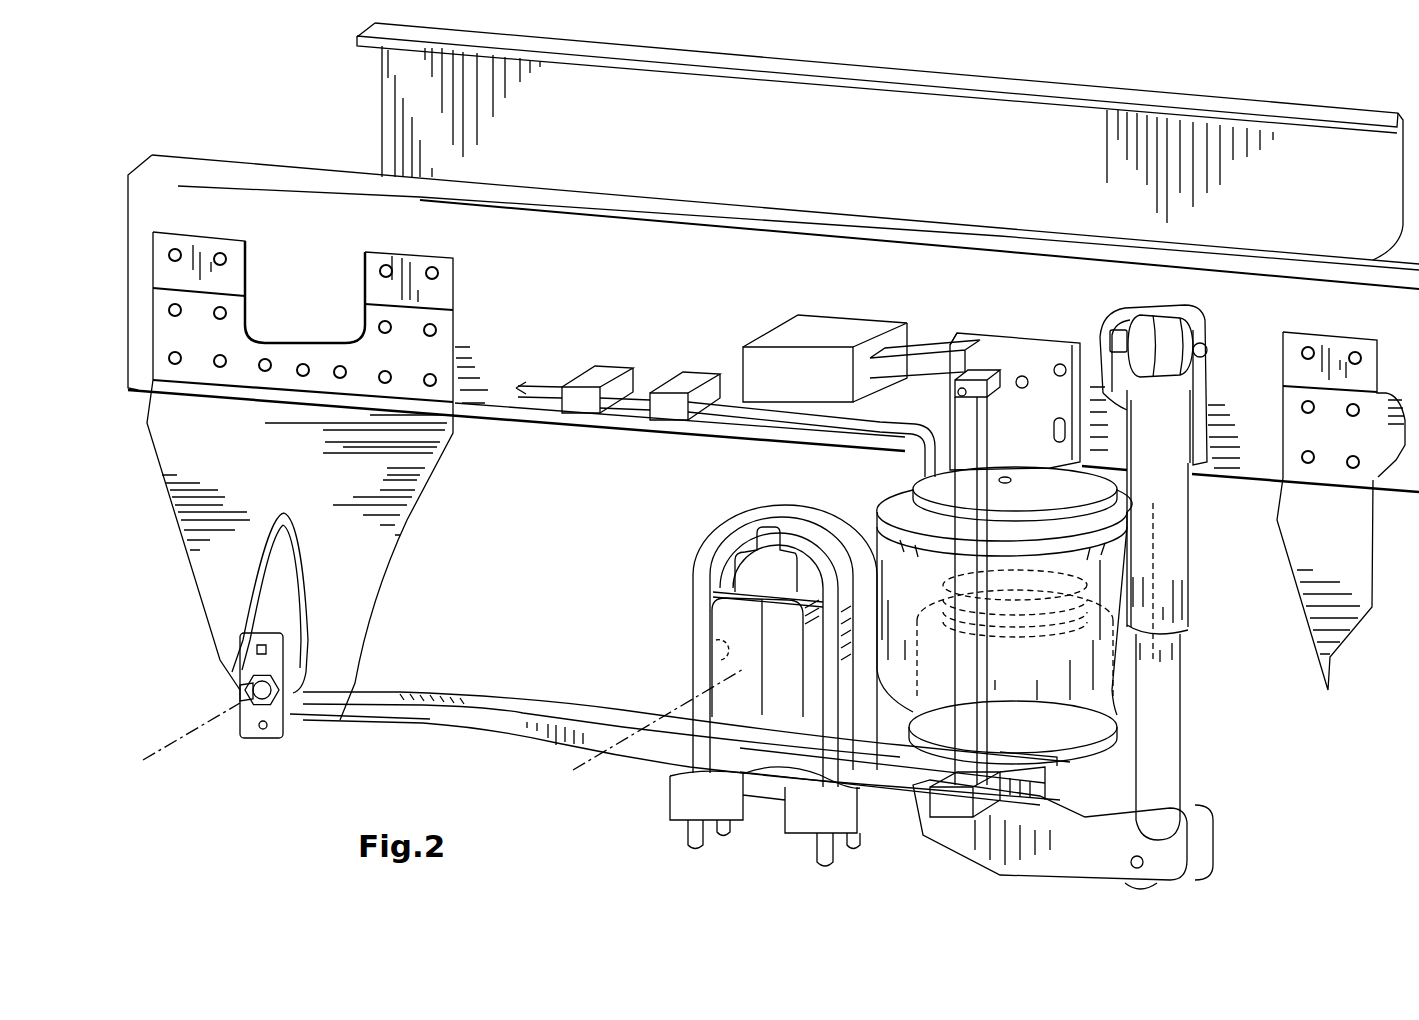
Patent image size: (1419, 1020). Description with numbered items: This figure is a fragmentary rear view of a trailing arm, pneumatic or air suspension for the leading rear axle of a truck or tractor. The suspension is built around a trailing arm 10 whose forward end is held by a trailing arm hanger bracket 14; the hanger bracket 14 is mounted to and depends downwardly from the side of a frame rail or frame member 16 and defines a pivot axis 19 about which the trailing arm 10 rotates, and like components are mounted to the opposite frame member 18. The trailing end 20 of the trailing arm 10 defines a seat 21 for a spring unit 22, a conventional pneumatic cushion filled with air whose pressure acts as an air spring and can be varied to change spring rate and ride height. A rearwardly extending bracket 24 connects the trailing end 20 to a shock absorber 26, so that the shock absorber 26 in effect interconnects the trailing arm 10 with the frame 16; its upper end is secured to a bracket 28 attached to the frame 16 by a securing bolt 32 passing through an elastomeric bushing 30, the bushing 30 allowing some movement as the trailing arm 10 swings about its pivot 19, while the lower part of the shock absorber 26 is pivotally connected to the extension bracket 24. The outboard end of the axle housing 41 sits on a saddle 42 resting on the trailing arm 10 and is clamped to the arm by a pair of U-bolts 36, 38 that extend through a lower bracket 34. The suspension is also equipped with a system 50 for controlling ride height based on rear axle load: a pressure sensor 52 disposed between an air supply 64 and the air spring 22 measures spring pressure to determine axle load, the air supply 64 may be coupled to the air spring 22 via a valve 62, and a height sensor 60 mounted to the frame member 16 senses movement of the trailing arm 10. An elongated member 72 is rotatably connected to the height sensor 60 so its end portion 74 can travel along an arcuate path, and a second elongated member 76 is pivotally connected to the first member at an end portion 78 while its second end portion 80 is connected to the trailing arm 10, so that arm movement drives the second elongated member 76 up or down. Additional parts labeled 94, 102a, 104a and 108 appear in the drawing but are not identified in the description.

The trailing arm 10 is at (551, 705).
The trailing arm hanger bracket 14 is at (167, 528).
The frame rail 16 is at (718, 282).
The opposite frame member 18 is at (770, 169).
The pivot axis 19 is at (143, 760).
The trailing end 20 is at (913, 790).
The seat 21 is at (1040, 752).
The spring unit 22 is at (930, 594).
The rearwardly extending bracket 24 is at (1027, 878).
The shock absorber 26 is at (1200, 657).
The bracket 28 is at (1210, 372).
The elastomeric bushing 30 is at (1200, 353).
The securing bolt 32 is at (1208, 353).
The lower bracket 34 is at (695, 800).
The U-bolt 36 is at (717, 542).
The U-bolt 38 is at (818, 510).
The axle housing 41 is at (713, 656).
The saddle 42 is at (723, 727).
The ride height control system 50 is at (813, 283).
The pressure sensor 52 is at (683, 373).
The height sensor 60 is at (843, 340).
The valve 62 is at (601, 373).
The air supply 64 is at (522, 380).
The elongated member 72 is at (917, 372).
The end portion 74 is at (1003, 337).
The second elongated member 76 is at (967, 643).
The end portion 78 is at (967, 425).
The second end portion 80 is at (967, 760).
The pivot bolt 94 is at (246, 686).
The aperture 102a is at (261, 730).
The spring eye 104a is at (278, 660).
The mounting plate 108 is at (273, 738).